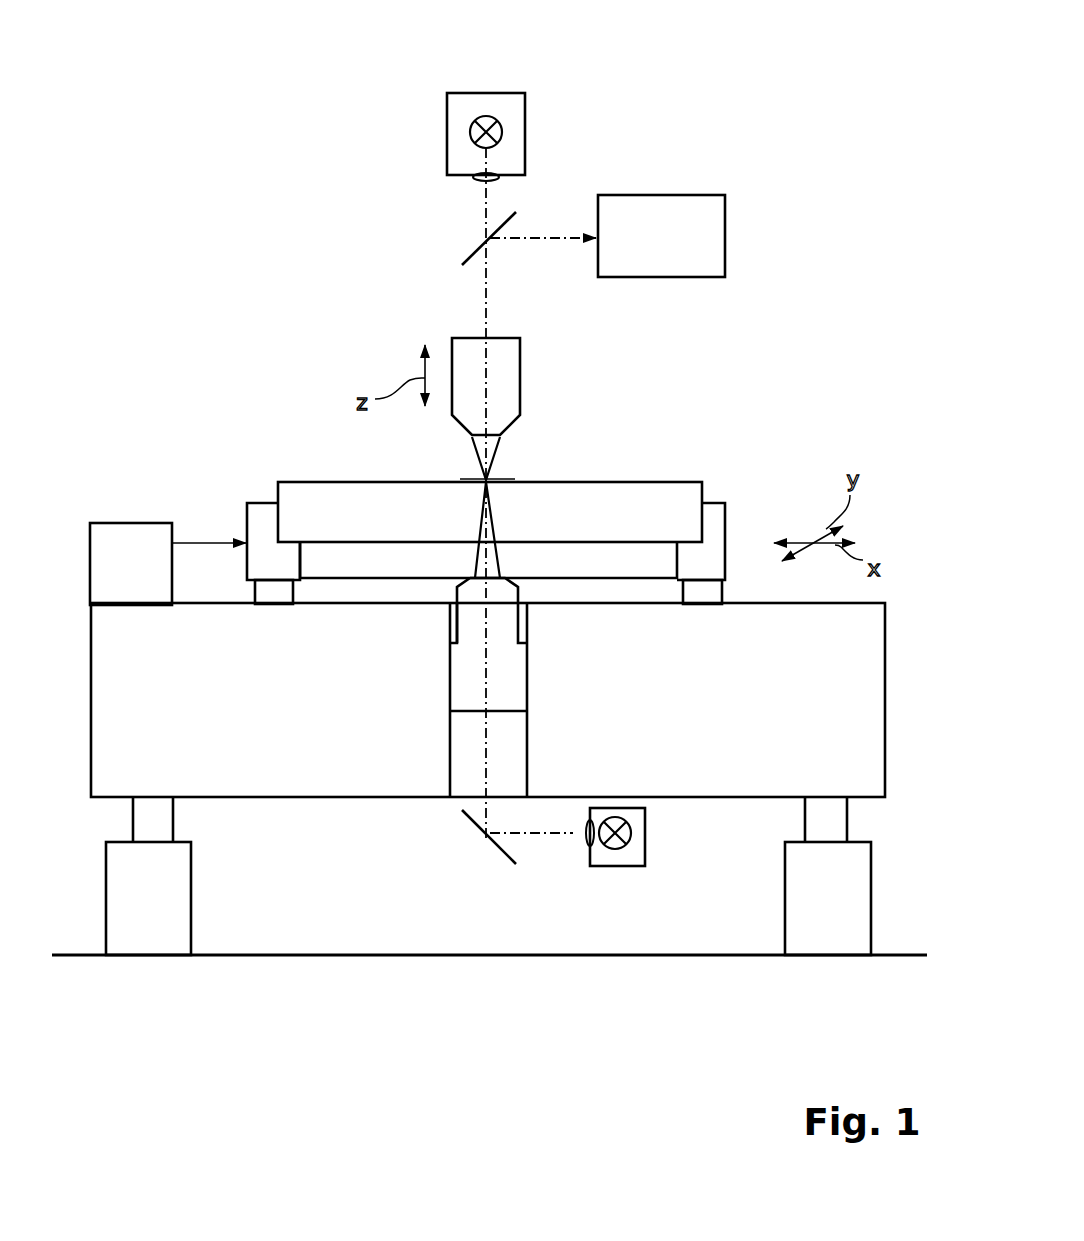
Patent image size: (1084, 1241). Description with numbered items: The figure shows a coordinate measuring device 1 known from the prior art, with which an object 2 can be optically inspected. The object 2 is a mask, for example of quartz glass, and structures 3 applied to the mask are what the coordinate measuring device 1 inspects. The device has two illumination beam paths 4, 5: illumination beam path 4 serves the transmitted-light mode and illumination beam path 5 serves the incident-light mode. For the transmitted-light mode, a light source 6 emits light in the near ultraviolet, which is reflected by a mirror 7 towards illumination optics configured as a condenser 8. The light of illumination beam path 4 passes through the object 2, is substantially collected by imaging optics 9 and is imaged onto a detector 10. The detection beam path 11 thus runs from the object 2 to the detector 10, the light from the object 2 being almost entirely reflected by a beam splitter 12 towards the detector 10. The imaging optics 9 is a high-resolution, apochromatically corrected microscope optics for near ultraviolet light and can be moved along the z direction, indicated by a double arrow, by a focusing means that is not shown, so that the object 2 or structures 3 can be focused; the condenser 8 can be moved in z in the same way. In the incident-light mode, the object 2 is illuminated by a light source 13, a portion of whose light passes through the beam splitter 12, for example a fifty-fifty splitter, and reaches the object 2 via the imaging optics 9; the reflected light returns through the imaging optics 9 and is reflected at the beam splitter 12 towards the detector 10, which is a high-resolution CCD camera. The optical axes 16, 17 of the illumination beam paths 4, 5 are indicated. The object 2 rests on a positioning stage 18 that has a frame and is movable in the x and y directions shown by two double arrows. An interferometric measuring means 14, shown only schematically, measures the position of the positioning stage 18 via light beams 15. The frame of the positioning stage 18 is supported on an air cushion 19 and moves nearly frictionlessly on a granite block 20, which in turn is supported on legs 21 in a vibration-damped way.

The coordinate measuring device 1 is at (278, 321).
The object 2 is at (629, 526).
The structures 3 is at (515, 479).
The illumination beam path 4 is at (487, 773).
The illumination beam path 5 is at (485, 200).
The light source 6 is at (646, 848).
The mirror 7 is at (462, 820).
The condenser 8 is at (510, 657).
The imaging optics 9 is at (522, 389).
The detector 10 is at (648, 251).
The detection beam path 11 is at (540, 238).
The beam splitter 12 is at (462, 260).
The light source 13 is at (487, 93).
The interferometric measuring means 14 is at (117, 573).
The light beams 15 is at (212, 543).
The optical axis 16 is at (482, 658).
The optical axis 17 is at (486, 274).
The positioning stage 18 is at (262, 518).
The air cushion 19 is at (275, 593).
The granite block 20 is at (174, 743).
The legs 21 is at (138, 913).